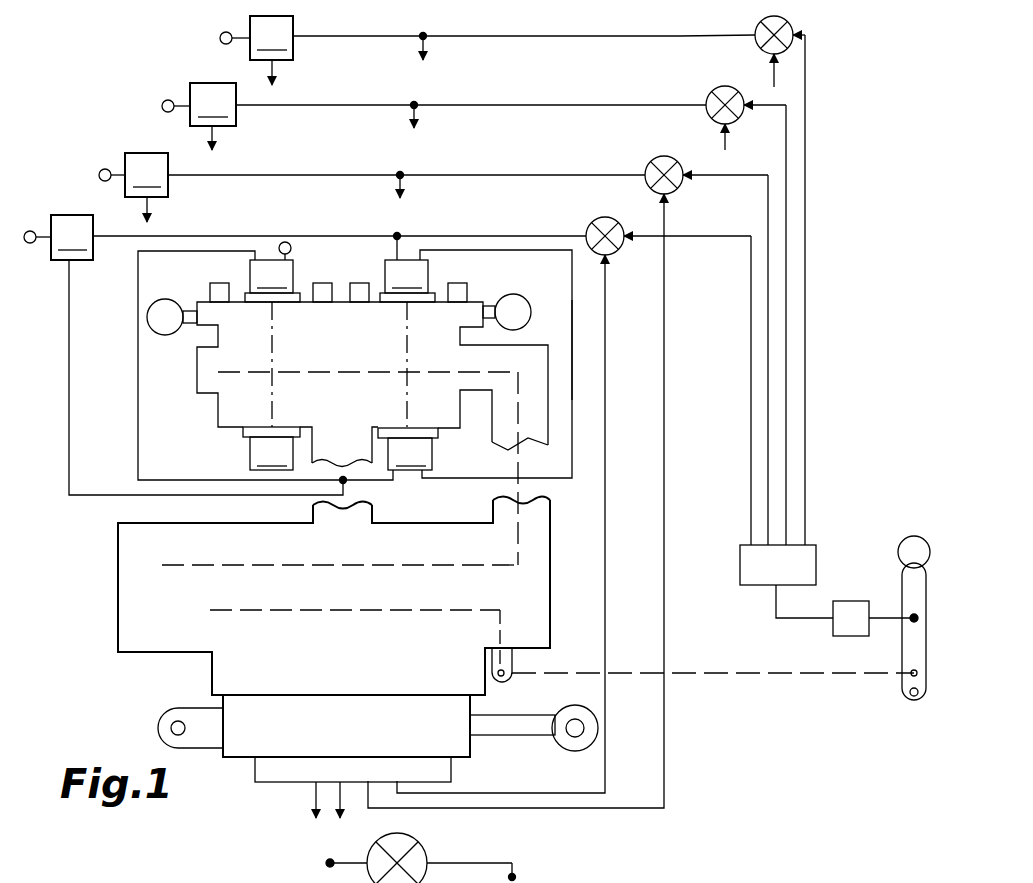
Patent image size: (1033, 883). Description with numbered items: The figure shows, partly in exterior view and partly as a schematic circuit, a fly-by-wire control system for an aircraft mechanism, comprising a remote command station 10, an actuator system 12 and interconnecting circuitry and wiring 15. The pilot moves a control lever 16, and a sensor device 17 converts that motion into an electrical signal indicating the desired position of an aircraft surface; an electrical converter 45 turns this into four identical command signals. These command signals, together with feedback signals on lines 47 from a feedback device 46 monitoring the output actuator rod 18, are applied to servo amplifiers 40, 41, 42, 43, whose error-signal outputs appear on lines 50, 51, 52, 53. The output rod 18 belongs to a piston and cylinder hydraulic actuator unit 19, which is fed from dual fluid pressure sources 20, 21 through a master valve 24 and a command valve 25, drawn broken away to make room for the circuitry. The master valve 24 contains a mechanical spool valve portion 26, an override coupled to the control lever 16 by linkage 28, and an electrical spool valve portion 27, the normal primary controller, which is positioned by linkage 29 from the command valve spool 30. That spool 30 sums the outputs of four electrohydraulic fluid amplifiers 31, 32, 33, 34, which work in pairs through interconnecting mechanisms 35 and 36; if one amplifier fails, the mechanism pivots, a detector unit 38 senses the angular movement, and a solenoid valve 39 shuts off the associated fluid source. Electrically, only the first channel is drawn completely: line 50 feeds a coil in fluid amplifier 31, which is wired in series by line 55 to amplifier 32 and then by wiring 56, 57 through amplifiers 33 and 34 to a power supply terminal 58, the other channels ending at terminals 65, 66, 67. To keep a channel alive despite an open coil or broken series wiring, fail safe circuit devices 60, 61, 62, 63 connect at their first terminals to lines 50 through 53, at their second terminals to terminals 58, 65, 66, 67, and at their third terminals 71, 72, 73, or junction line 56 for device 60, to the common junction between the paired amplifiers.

The remote command station 10 is at (845, 587).
The actuator system 12 is at (287, 596).
The interconnecting circuitry and wiring 15 is at (680, 32).
The control lever 16 is at (916, 548).
The sensor device 17 is at (845, 605).
The output actuator rod 18 is at (520, 724).
The piston and cylinder hydraulic actuator unit 19 is at (383, 712).
The fluid pressure source 20 is at (521, 296).
The fluid pressure source 21 is at (163, 336).
The master valve 24 is at (126, 622).
The command valve 25 is at (226, 410).
The mechanical spool valve portion 26 is at (322, 610).
The electrical spool valve portion 27 is at (278, 565).
The mechanical linkage 28 is at (740, 673).
The mechanical linkage 29 is at (520, 438).
The command valve spool 30 is at (298, 372).
The fluid amplifier 31 is at (407, 281).
The fluid amplifier 32 is at (408, 449).
The fluid amplifier 33 is at (271, 448).
The fluid amplifier 34 is at (272, 281).
The interconnecting mechanism 35 is at (407, 343).
The interconnecting mechanism 36 is at (272, 418).
The detector unit 38 is at (356, 283).
The solenoid valve 39 is at (210, 291).
The servo amplifier 40 is at (600, 220).
The servo amplifier 41 is at (658, 160).
The servo amplifier 42 is at (714, 90).
The servo amplifier 43 is at (786, 21).
The electrical converter 45 is at (806, 550).
The feedback device 46 is at (316, 760).
The feedback lines 47 is at (380, 806).
The error signal line 50 is at (478, 236).
The error signal line 51 is at (490, 175).
The error signal line 52 is at (512, 105).
The error signal line 53 is at (538, 36).
The series connection line 55 is at (572, 336).
The wiring 56 is at (69, 377).
The wiring 57 is at (138, 392).
The power supply terminal 58 is at (28, 231).
The fail safe circuit device 60 is at (72, 237).
The fail safe circuit device 61 is at (146, 175).
The fail safe circuit device 62 is at (213, 104).
The fail safe circuit device 63 is at (271, 38).
The power supply terminal 65 is at (101, 170).
The power supply terminal 66 is at (164, 101).
The power supply terminal 67 is at (221, 33).
The third terminal 71 is at (150, 206).
The third terminal 72 is at (215, 134).
The third terminal 73 is at (275, 69).